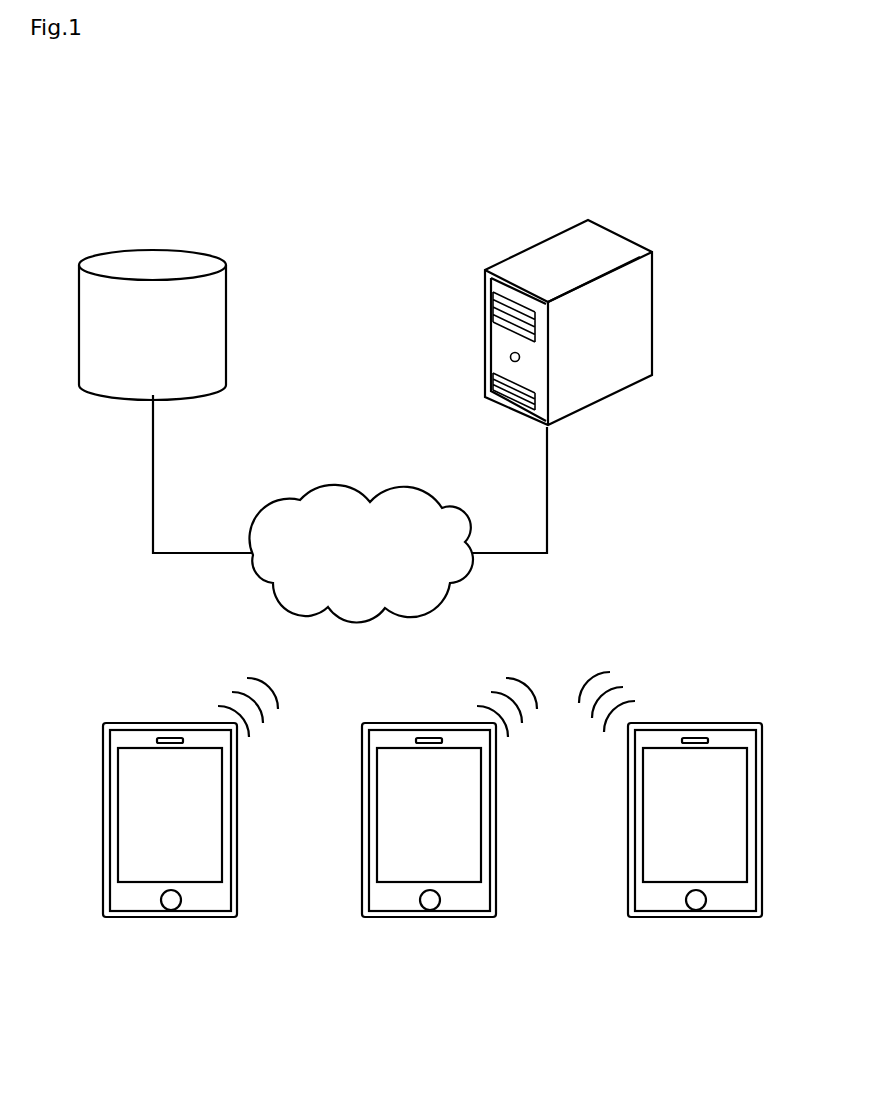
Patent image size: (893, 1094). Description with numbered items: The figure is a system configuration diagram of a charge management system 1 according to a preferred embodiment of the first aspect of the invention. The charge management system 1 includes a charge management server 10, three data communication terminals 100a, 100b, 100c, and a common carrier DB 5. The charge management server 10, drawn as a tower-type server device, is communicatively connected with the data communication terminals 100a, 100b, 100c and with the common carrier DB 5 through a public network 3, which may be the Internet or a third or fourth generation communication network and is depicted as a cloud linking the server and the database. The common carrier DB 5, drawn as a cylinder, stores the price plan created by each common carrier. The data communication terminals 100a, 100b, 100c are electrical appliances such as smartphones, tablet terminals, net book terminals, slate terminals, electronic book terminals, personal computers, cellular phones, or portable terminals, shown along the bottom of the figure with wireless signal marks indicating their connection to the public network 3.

The charge management system 1 is at (587, 125).
The public network 3 is at (347, 502).
The common carrier DB 5 is at (191, 261).
The charge management server 10 is at (611, 241).
The data communication terminal 100a is at (131, 741).
The data communication terminal 100b is at (390, 741).
The data communication terminal 100c is at (657, 741).